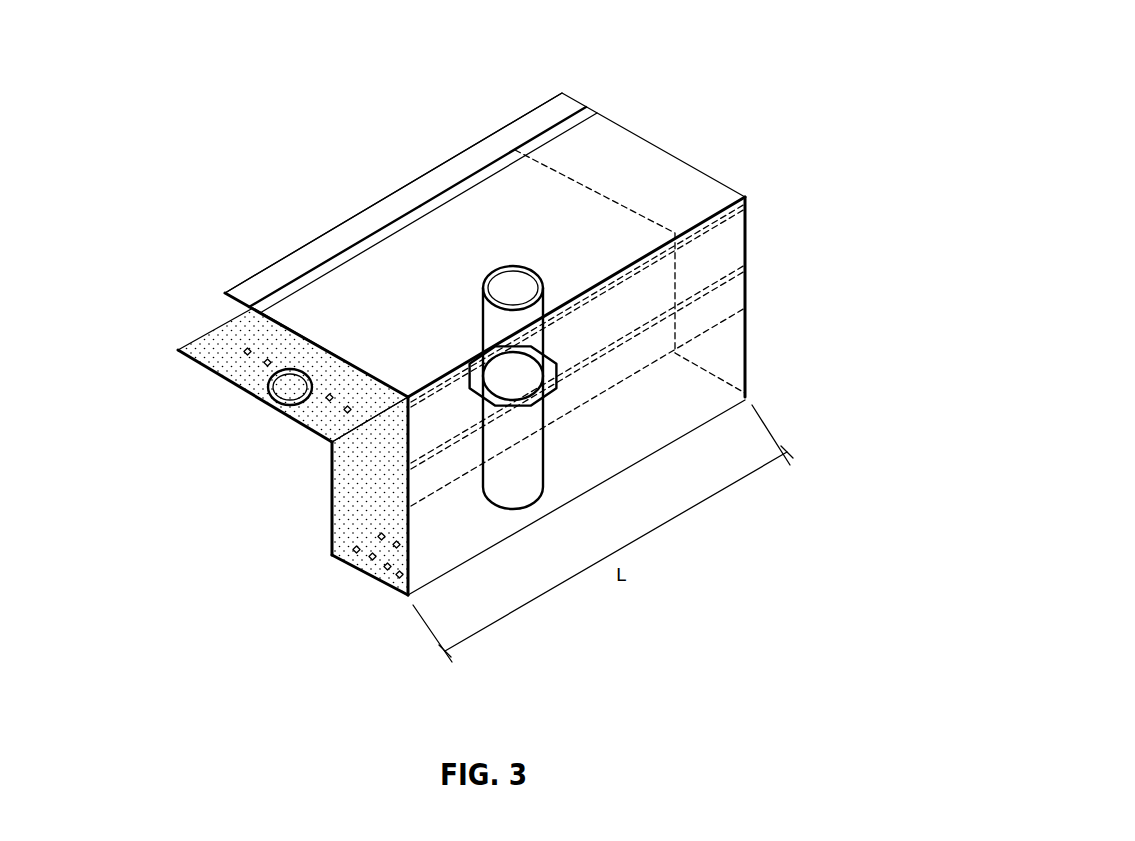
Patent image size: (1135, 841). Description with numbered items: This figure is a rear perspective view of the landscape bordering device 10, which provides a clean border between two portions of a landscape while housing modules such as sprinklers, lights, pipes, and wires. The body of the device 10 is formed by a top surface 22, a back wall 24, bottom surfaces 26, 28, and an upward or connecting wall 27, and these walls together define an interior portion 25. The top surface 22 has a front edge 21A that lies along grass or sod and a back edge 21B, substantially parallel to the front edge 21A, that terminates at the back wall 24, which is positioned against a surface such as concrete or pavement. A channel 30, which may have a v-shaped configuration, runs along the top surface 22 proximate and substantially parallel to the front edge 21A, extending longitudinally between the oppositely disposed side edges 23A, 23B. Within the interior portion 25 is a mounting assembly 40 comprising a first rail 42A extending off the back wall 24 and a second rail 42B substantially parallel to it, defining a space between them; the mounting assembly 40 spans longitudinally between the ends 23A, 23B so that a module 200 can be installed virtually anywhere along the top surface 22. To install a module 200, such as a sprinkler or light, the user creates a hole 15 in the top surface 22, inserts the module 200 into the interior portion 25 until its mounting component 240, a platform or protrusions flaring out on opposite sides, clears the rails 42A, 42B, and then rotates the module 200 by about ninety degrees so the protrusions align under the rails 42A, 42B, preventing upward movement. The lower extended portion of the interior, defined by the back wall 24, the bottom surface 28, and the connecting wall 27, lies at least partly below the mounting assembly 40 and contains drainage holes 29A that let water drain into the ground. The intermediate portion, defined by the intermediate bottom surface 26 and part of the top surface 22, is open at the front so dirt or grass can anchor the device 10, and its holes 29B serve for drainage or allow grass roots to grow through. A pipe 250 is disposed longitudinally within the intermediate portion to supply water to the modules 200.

The bordering system or device 10 is at (549, 30).
The hole or opening 15 is at (507, 283).
The front edge 21A is at (444, 165).
The back edge 21B is at (717, 212).
The top surface or top wall 22 is at (627, 160).
The side edge 23A is at (280, 325).
The side edge 23B is at (617, 120).
The back wall 24 is at (725, 237).
The interior portion 25 is at (352, 489).
The intermediate bottom surface 26 is at (192, 362).
The upward or connecting wall 27 is at (332, 467).
The bottom surface 28 is at (350, 563).
The drainage holes 29A is at (351, 548).
The holes 29B is at (228, 340).
The channel 30 is at (540, 145).
The mounting assembly 40 is at (663, 318).
The rail 42A is at (623, 343).
The rail 42B is at (575, 307).
The module 200 is at (479, 331).
The mounting component 240 is at (552, 373).
The pipe 250 is at (272, 385).